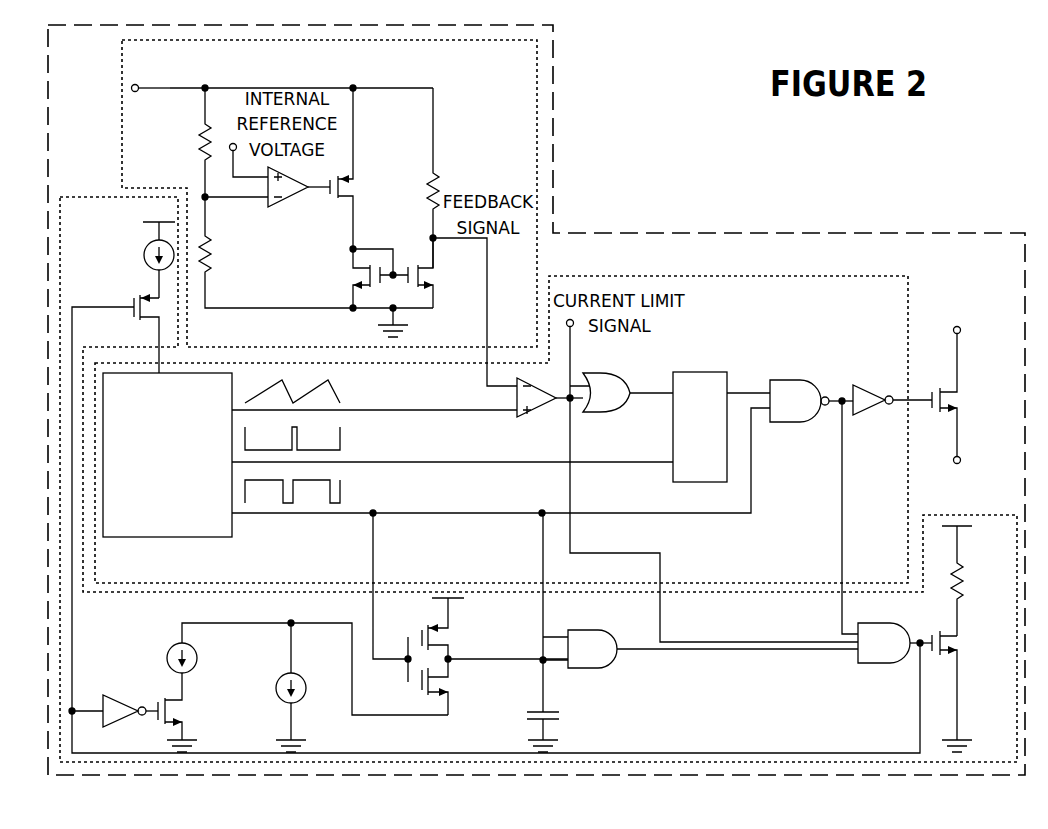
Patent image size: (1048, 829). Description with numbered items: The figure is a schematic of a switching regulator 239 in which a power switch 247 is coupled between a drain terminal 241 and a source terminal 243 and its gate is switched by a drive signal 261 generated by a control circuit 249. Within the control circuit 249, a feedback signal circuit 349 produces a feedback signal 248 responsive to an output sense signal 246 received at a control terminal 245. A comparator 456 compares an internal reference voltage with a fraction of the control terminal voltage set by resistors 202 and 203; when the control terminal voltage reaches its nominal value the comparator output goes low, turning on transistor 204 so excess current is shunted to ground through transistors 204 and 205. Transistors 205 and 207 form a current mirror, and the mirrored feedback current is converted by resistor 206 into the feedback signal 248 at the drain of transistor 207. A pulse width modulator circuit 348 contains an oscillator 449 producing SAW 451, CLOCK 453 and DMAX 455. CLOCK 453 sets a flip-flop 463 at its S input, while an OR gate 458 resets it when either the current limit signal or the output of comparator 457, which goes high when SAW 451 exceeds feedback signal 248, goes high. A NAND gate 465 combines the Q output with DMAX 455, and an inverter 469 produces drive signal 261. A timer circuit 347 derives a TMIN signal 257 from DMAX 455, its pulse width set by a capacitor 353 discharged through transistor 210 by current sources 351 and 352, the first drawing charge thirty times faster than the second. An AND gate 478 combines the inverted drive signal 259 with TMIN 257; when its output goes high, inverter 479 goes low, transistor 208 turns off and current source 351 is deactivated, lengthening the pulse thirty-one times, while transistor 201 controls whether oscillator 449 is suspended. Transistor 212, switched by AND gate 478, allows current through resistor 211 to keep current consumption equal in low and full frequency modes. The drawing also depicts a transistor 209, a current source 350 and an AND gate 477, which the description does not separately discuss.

The transistor 201 is at (134, 299).
The resistor 202 is at (200, 140).
The resistor 203 is at (213, 257).
The transistor 204 is at (348, 187).
The transistor 205 is at (353, 278).
The resistor 206 is at (440, 184).
The transistor 207 is at (434, 279).
The transistor 208 is at (185, 713).
The transistor 209 is at (425, 626).
The transistor 210 is at (449, 686).
The resistor 211 is at (962, 584).
The transistor 212 is at (958, 641).
The switching regulator 239 is at (972, 176).
The drain terminal 241 is at (960, 330).
The source terminal 243 is at (960, 460).
The control terminal 245 is at (136, 94).
The output sense signal 246 is at (186, 86).
The power switch 247 is at (945, 390).
The feedback signal 248 is at (487, 312).
The control circuit 249 is at (553, 128).
The TMIN signal 257 is at (720, 652).
The inverted drive signal 259 is at (840, 500).
The drive signal 261 is at (905, 399).
The timer circuit 347 is at (112, 197).
The pulse width modulator circuit 348 is at (760, 277).
The feedback signal circuit 349 is at (122, 84).
The current source 350 is at (143, 255).
The current source 351 is at (167, 656).
The current source 352 is at (276, 685).
The capacitor 353 is at (559, 714).
The oscillator 449 is at (143, 538).
The SAW signal 451 is at (185, 405).
The CLOCK signal 453 is at (165, 463).
The DMAX signal 455 is at (185, 513).
The comparator 456 is at (292, 201).
The comparator 457 is at (512, 412).
The OR gate 458 is at (606, 411).
The flip-flop 463 is at (690, 372).
The NAND gate 465 is at (798, 380).
The inverter 469 is at (862, 385).
The AND gate 477 is at (590, 630).
The AND gate 478 is at (878, 664).
The inverter 479 is at (112, 700).